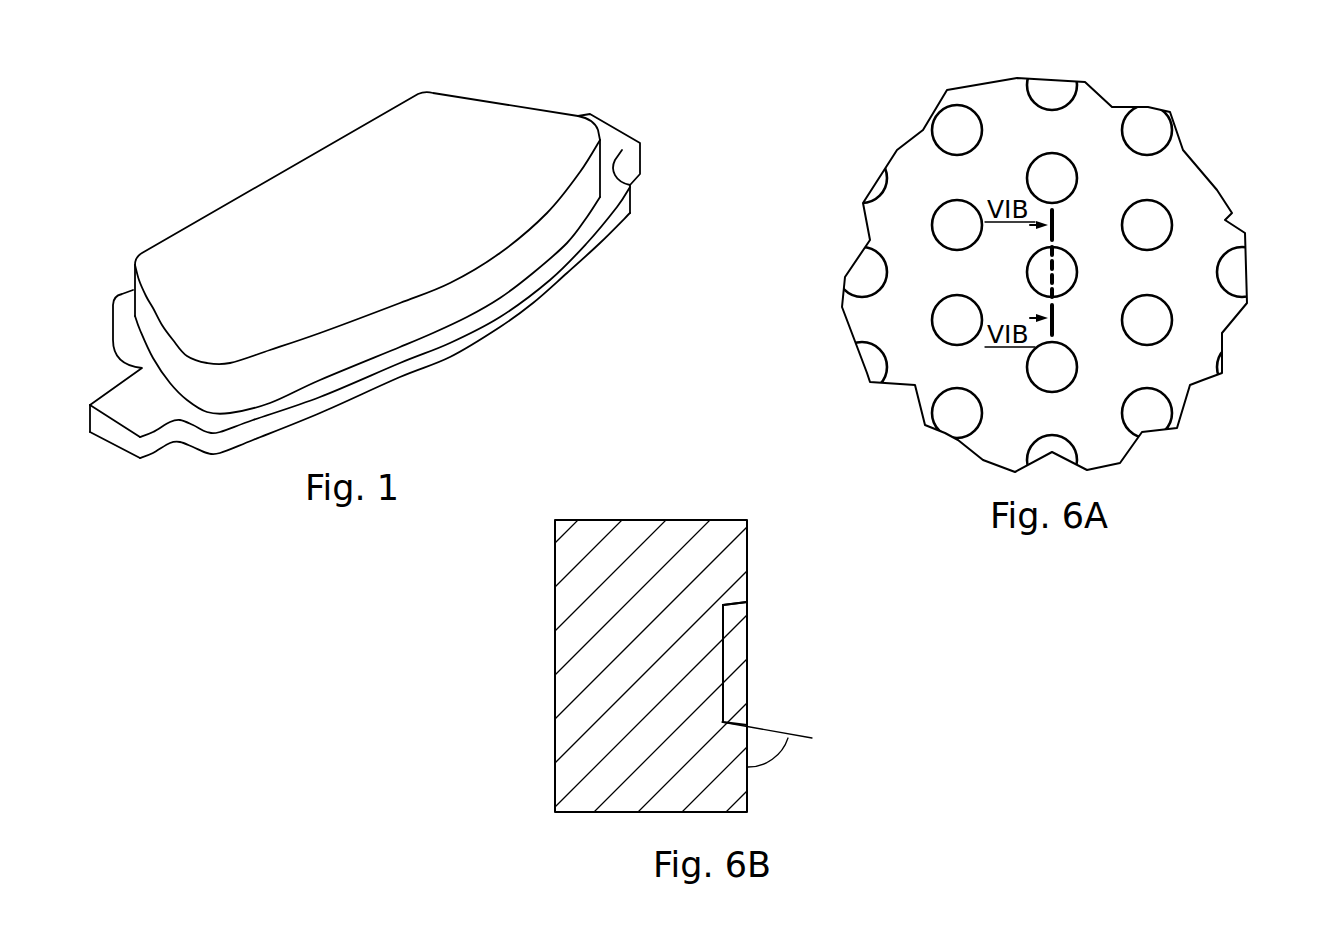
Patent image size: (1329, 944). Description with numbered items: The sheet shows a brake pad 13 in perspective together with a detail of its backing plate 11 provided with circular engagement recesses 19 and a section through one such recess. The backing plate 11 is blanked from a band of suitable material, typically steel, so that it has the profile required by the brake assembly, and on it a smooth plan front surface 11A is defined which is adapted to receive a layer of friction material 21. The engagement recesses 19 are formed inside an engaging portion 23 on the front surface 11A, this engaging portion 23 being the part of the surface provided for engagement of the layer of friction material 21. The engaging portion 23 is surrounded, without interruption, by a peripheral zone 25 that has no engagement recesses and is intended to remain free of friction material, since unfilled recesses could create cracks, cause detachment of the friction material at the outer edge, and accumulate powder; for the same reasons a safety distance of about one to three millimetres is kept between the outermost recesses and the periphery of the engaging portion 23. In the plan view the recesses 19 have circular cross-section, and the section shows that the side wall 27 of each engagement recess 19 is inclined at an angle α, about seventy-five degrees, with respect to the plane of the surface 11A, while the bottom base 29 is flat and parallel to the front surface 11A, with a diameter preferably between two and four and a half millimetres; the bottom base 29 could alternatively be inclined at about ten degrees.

In FIG. 1, the backing plate 11 is at (133, 399).
In FIG. 6A, the backing plate 11 is at (1210, 143).
In FIG. 6B, the backing plate 11 is at (673, 507).
In FIG. 6A, the plan front surface 11A is at (1079, 429).
In FIG. 1, the brake pad 13 is at (135, 509).
In FIG. 6A, the engagement recess 19 is at (1060, 172).
In FIG. 6B, the engagement recess 19 is at (760, 630).
In FIG. 1, the layer of friction material 21 is at (382, 237).
In FIG. 1, the engaging portion 23 is at (413, 347).
In FIG. 1, the peripheral zone 25 is at (557, 256).
In FIG. 6B, the side wall 27 is at (735, 605).
In FIG. 6A, the bottom base 29 is at (948, 326).
In FIG. 6B, the bottom base 29 is at (725, 673).